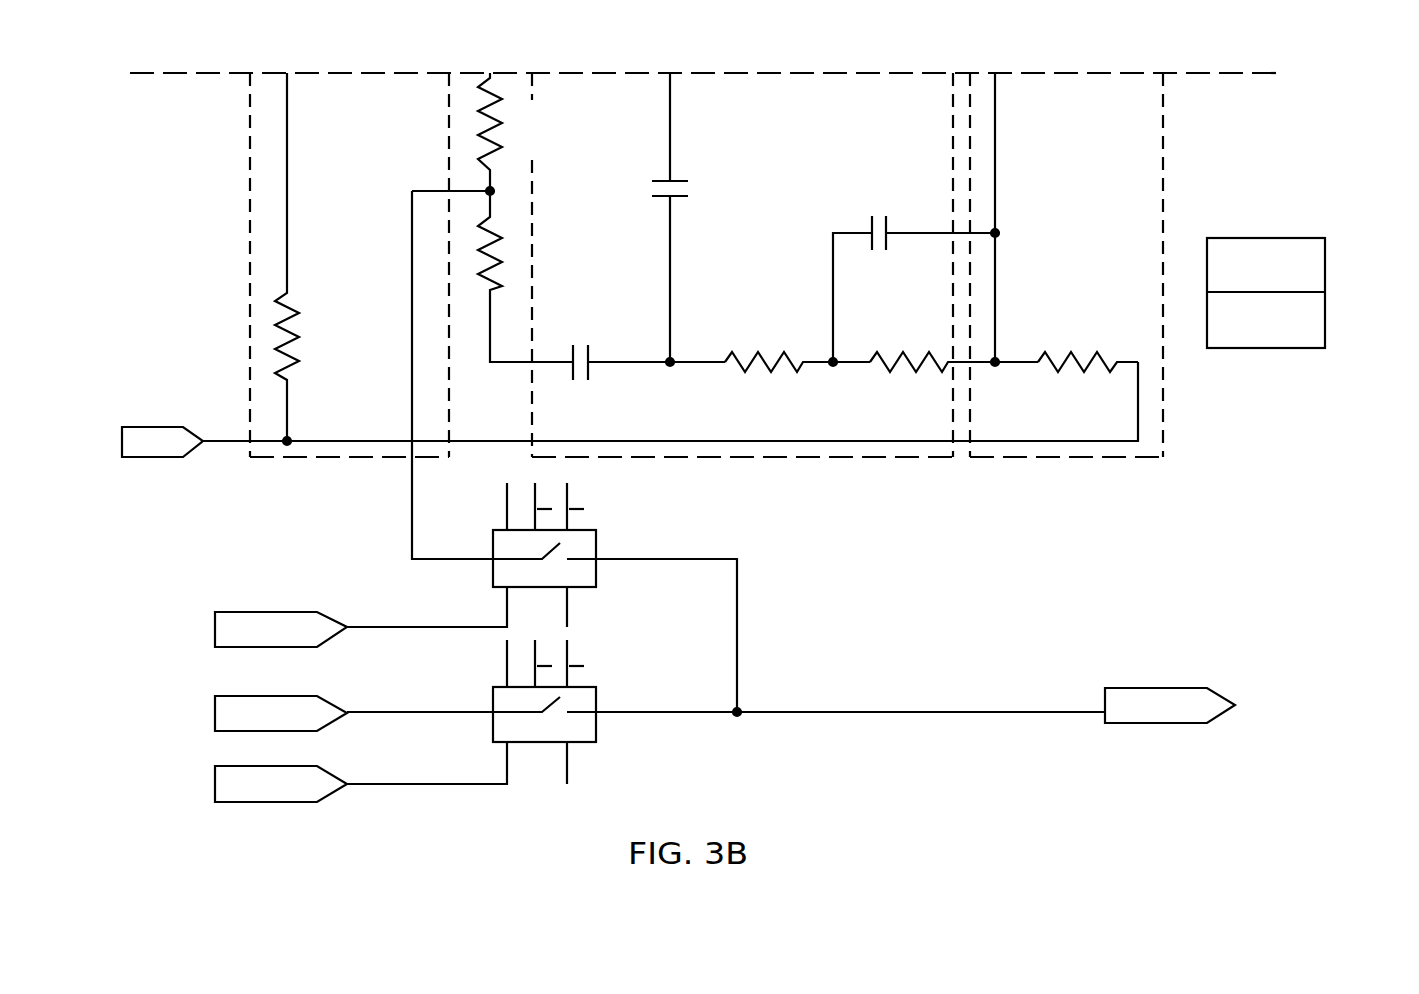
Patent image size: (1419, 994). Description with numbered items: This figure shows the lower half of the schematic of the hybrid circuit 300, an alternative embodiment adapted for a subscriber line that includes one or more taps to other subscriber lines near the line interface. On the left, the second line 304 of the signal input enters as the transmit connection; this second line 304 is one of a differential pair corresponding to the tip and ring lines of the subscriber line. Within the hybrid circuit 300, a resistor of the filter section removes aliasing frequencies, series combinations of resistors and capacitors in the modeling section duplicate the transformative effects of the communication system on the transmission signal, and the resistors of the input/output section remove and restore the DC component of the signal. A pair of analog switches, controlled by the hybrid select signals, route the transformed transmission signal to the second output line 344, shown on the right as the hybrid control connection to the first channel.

The hybrid circuit 300 is at (1308, 499).
The second line 304 is at (150, 460).
The second output line 344 is at (1162, 723).